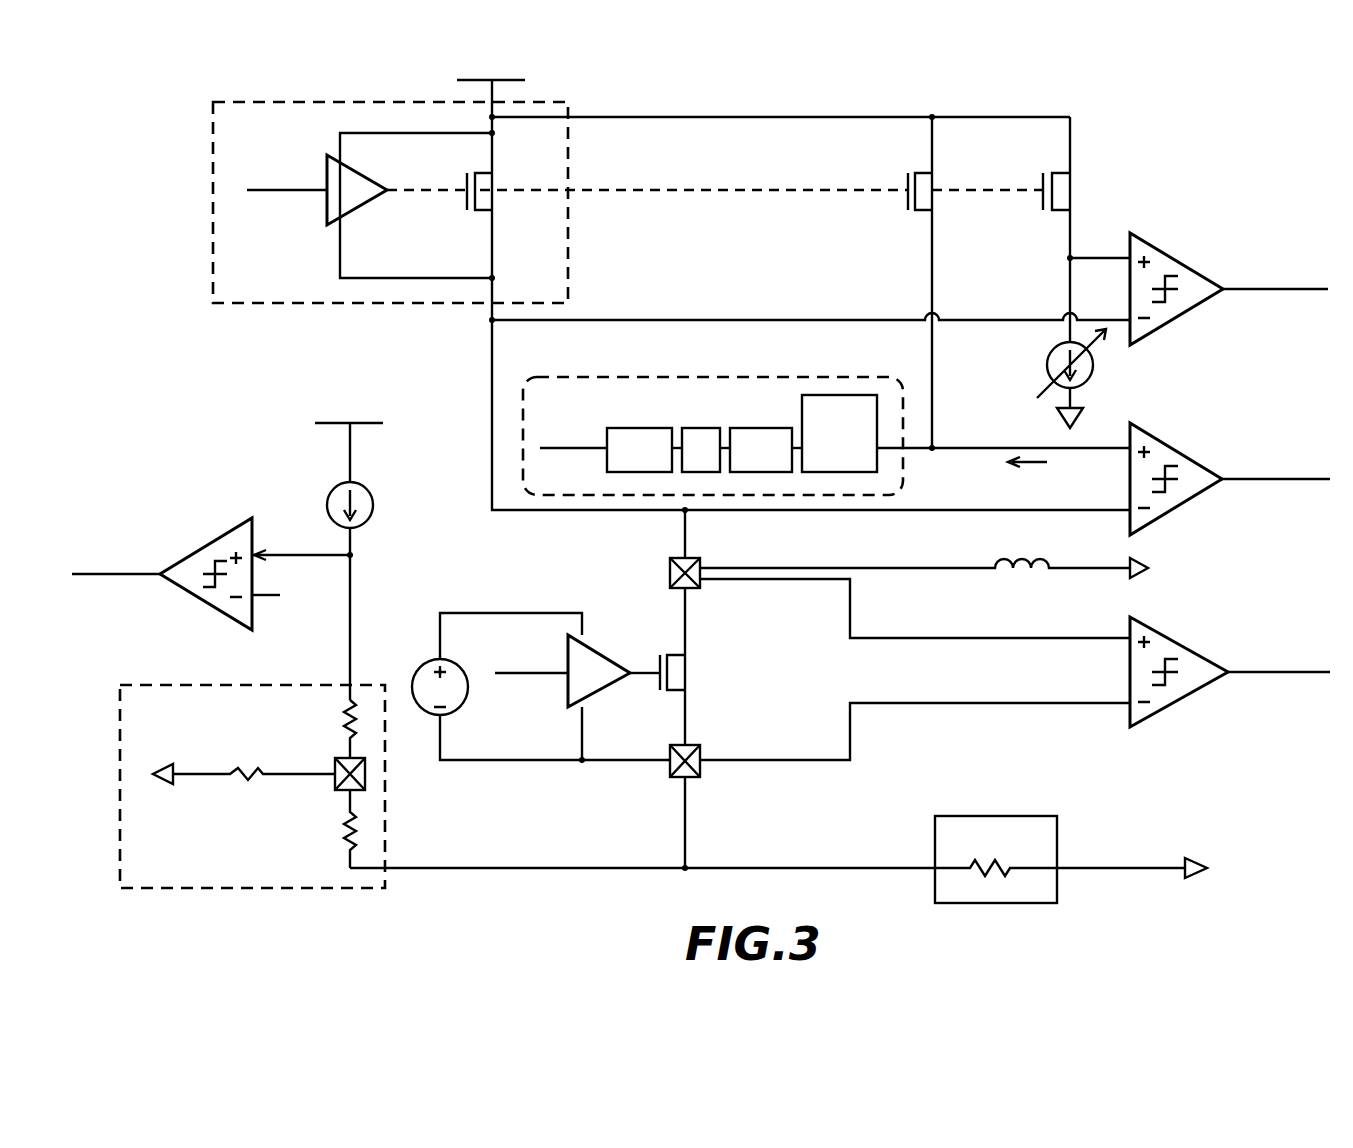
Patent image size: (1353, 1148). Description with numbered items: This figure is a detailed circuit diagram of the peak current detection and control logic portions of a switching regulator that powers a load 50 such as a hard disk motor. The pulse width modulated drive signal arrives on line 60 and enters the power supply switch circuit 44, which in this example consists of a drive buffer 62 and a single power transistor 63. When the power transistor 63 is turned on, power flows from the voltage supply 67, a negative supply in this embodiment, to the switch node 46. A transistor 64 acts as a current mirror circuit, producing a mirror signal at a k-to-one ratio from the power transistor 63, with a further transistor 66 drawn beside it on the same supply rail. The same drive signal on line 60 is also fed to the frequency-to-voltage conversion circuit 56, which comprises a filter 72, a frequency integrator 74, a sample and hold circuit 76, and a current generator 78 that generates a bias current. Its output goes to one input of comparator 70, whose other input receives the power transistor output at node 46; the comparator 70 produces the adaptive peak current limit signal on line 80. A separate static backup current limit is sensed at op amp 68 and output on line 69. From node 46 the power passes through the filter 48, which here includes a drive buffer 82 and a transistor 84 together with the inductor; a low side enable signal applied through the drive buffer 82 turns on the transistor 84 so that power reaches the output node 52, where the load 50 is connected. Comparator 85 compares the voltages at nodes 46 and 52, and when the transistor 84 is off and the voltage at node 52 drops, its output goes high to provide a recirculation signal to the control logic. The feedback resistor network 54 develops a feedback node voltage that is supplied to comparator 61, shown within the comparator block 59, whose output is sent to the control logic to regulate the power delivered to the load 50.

The power supply switch circuit 44 is at (268, 102).
The voltage supply 67 is at (456, 72).
The PWM output line 60 is at (288, 190).
The drive buffer 62 is at (352, 205).
The power transistor 63 is at (497, 200).
The transistor 64 is at (938, 200).
The mirror transistor 66 is at (1066, 188).
The op amp 68 is at (1164, 251).
The line 69 is at (1273, 290).
The comparator 70 is at (1164, 441).
The line 80 is at (1276, 481).
The frequency-to-voltage conversion circuit 56 is at (852, 368).
The filter 72 is at (641, 428).
The frequency integrator 74 is at (697, 428).
The sample and hold circuit 76 is at (752, 428).
The current generator 78 is at (802, 408).
The node 46 is at (688, 530).
The filter 48 is at (1072, 556).
The transistor 84 is at (682, 672).
The drive buffer 82 is at (598, 697).
The output node 52 is at (692, 779).
The load 50 is at (1020, 816).
The comparator 85 is at (1195, 697).
The error comparator circuit 59 is at (232, 478).
The comparator 61 is at (206, 603).
The feedback resistor network 54 is at (150, 685).